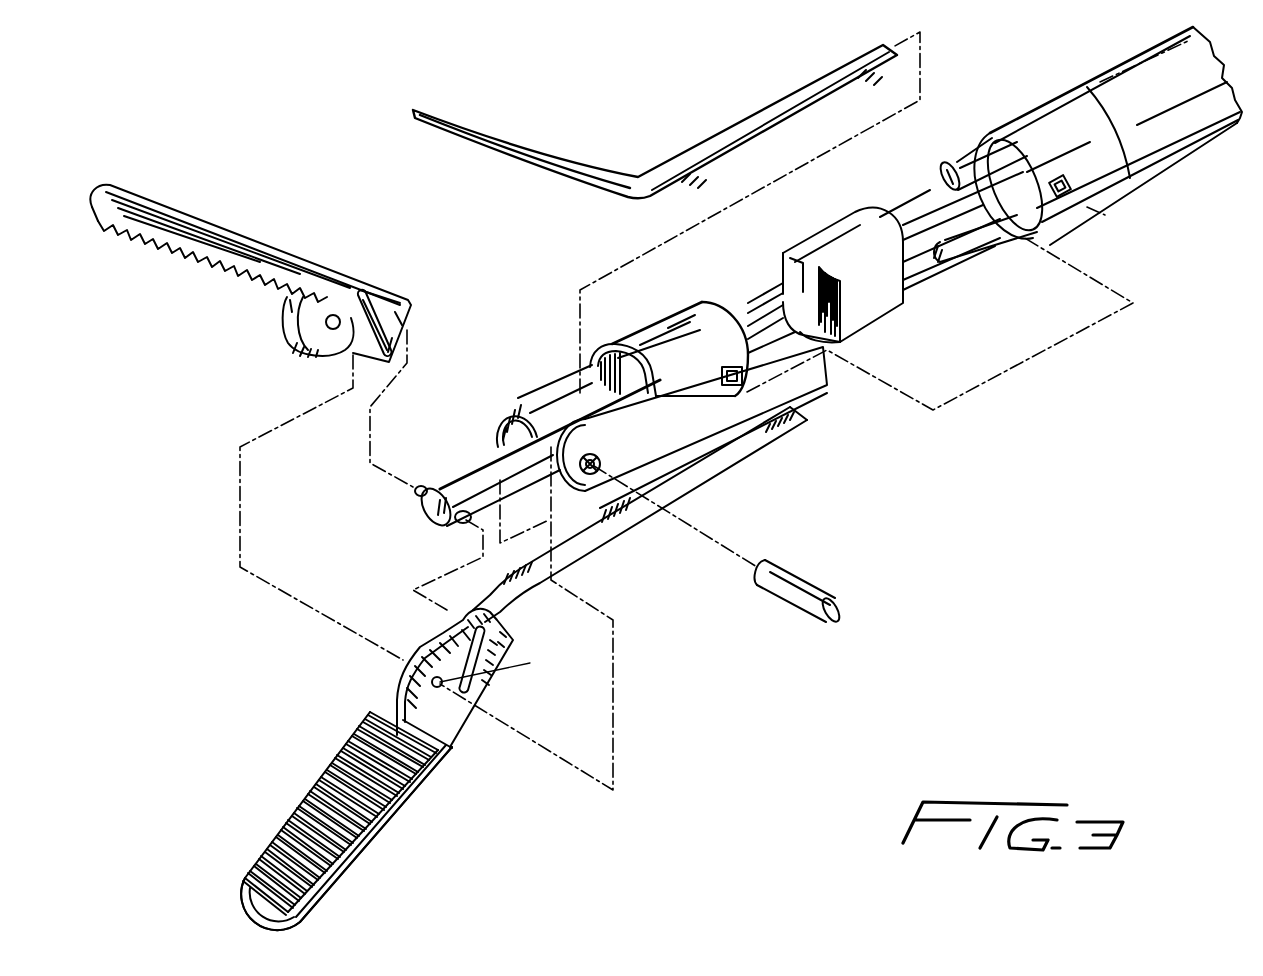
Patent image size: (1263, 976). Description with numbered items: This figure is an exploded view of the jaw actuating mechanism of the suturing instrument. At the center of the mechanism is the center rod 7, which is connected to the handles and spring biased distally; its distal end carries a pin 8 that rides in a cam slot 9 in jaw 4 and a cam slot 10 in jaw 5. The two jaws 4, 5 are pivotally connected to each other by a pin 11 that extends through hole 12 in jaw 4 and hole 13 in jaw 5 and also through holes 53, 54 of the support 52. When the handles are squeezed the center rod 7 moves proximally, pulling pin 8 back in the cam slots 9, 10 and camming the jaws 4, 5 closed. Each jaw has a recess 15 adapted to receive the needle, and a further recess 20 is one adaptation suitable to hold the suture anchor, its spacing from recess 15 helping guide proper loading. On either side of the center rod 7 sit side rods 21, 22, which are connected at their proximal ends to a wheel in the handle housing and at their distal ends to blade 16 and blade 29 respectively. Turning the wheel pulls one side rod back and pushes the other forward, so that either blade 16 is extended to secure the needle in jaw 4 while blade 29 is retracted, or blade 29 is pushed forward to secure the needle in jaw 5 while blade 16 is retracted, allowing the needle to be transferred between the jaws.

The jaw 4 is at (254, 240).
The jaw 5 is at (308, 790).
The center rod 7 is at (921, 240).
The pin 8 is at (412, 494).
The cam slot 9 is at (391, 336).
The cam slot 10 is at (473, 677).
The pin 11 is at (812, 583).
The hole 12 is at (283, 341).
The hole 13 is at (428, 640).
The recess 15 is at (243, 882).
The blade 16 is at (727, 132).
The recess 20 is at (405, 791).
The side rod 21 is at (957, 168).
The side rod 22 is at (973, 247).
The blade 29 is at (756, 443).
The support 52 is at (652, 330).
The hole 53 is at (520, 402).
The hole 54 is at (592, 474).